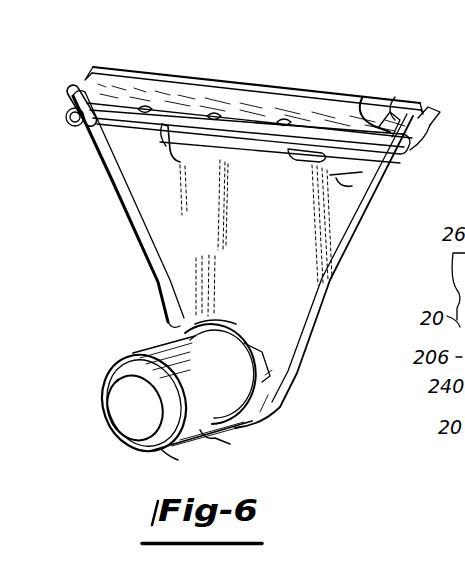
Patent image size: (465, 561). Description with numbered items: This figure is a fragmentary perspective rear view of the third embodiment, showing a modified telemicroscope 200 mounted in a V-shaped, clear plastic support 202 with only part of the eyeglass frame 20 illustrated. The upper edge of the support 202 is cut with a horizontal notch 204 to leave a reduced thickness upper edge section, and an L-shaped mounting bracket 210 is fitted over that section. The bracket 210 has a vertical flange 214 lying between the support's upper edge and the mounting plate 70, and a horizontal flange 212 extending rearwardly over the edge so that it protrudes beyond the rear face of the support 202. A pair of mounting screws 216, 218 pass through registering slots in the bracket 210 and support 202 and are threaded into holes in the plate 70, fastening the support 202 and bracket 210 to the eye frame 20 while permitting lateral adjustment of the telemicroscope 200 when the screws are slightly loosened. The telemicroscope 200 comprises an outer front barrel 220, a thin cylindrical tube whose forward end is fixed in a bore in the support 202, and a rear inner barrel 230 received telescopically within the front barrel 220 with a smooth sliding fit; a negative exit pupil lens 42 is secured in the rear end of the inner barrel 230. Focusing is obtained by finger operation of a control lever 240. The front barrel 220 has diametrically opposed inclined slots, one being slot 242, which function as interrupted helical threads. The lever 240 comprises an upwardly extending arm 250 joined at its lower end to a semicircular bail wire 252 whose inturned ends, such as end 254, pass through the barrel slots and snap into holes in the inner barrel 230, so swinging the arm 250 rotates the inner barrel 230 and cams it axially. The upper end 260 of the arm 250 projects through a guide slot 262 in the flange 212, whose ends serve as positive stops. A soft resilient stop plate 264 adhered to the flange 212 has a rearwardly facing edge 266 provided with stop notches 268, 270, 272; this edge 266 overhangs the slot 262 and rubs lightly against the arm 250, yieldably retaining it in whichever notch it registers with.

The frame 20 is at (395, 97).
The negative exit pupil lens 42 is at (117, 423).
The mounting plate 70 is at (283, 121).
The telemicroscope 200 is at (428, 107).
The support 202 is at (360, 205).
The horizontal notch 204 is at (362, 173).
The L-shaped mounting bracket 210 is at (404, 146).
The horizontal flange 212 is at (362, 98).
The vertical flange 214 is at (418, 122).
The mounting screw 216 is at (168, 160).
The mounting screw 218 is at (285, 163).
The outer front barrel 220 is at (204, 435).
The rear inner barrel 230 is at (162, 450).
The control lever 240 is at (177, 242).
The slot 242 is at (240, 397).
The arm 250 is at (114, 190).
The semicircular bail wire 252 is at (205, 318).
The inturned end 254 is at (262, 364).
The upper end of arm 260 is at (75, 86).
The guide slot 262 is at (96, 134).
The stop plate 264 is at (163, 92).
The rearwardly facing edge 266 is at (215, 113).
The stop notch 268 is at (143, 110).
The stop notch 270 is at (235, 84).
The stop notch 272 is at (305, 97).